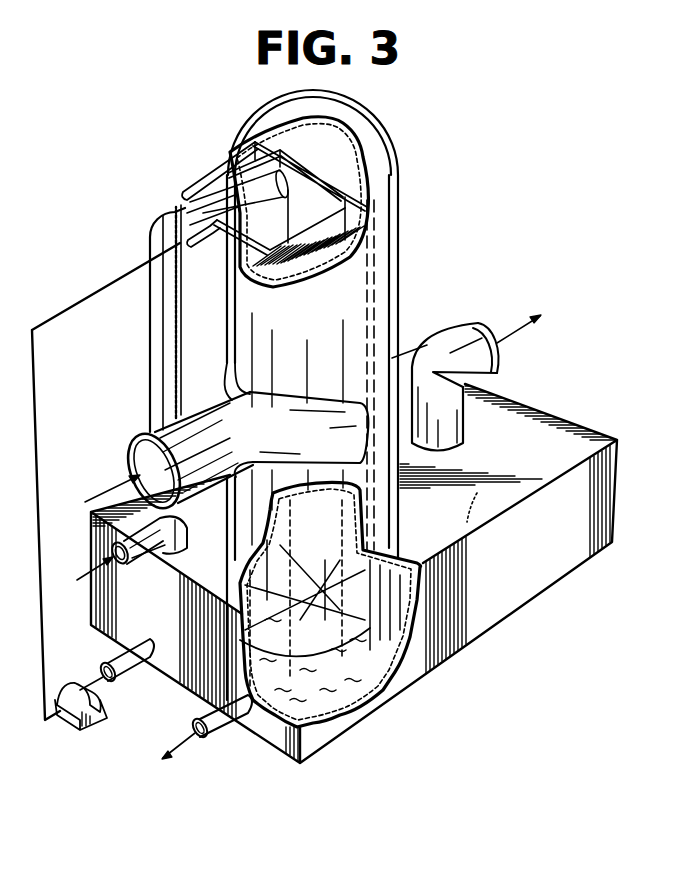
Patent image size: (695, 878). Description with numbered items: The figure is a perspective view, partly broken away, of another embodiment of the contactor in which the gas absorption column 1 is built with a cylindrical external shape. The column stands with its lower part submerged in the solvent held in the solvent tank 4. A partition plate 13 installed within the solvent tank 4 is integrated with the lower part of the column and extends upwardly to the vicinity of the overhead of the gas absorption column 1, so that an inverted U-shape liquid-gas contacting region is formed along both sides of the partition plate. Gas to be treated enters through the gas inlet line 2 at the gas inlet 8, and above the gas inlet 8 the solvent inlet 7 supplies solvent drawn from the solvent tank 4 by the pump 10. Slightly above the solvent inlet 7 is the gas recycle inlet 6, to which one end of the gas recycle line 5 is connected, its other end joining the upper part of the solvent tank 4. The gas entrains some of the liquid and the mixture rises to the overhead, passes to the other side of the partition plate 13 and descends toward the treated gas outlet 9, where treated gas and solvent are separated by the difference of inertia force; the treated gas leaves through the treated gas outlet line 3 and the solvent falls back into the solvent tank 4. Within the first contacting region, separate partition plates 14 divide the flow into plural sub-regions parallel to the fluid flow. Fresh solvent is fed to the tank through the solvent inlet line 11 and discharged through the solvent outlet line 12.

The gas absorption column 1 is at (388, 240).
The gas inlet line 2 is at (165, 432).
The treated gas outlet line 3 is at (452, 343).
The solvent tank 4 is at (531, 582).
The gas recycle line 5 is at (170, 348).
The gas recycle inlet 6 is at (222, 237).
The solvent inlet 7 is at (198, 173).
The gas inlet 8 is at (297, 408).
The treated gas outlet 9 is at (450, 443).
The pump 10 is at (97, 700).
The solvent inlet line 11 is at (142, 558).
The solvent outlet line 12 is at (230, 730).
The partition plate 13 is at (380, 180).
The separate partition plates 14 is at (327, 183).